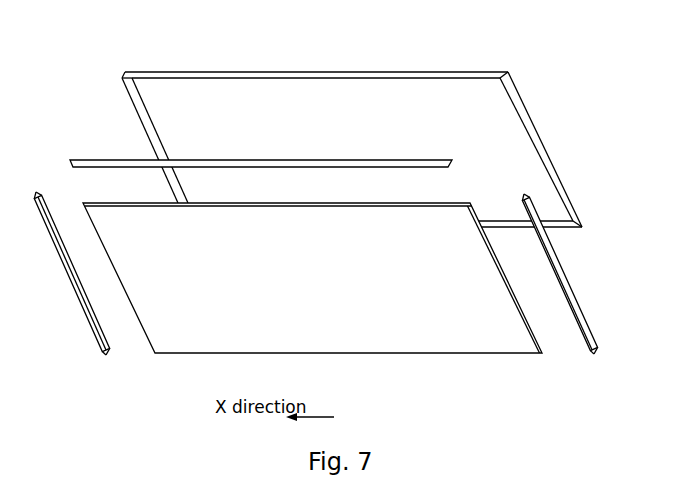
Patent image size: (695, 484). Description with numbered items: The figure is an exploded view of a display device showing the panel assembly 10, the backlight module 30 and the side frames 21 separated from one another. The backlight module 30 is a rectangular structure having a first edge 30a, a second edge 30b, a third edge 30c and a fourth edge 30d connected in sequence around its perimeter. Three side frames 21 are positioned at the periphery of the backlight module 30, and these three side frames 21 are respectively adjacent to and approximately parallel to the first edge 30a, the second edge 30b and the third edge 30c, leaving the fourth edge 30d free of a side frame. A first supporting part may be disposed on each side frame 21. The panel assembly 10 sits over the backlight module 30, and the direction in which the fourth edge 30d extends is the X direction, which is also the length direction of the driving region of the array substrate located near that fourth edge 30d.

The panel assembly 10 is at (436, 346).
The side frame 21 is at (86, 167).
The backlight module 30 is at (348, 144).
The first edge 30a is at (139, 107).
The second edge 30b is at (244, 77).
The third edge 30c is at (522, 107).
The fourth edge 30d is at (557, 227).